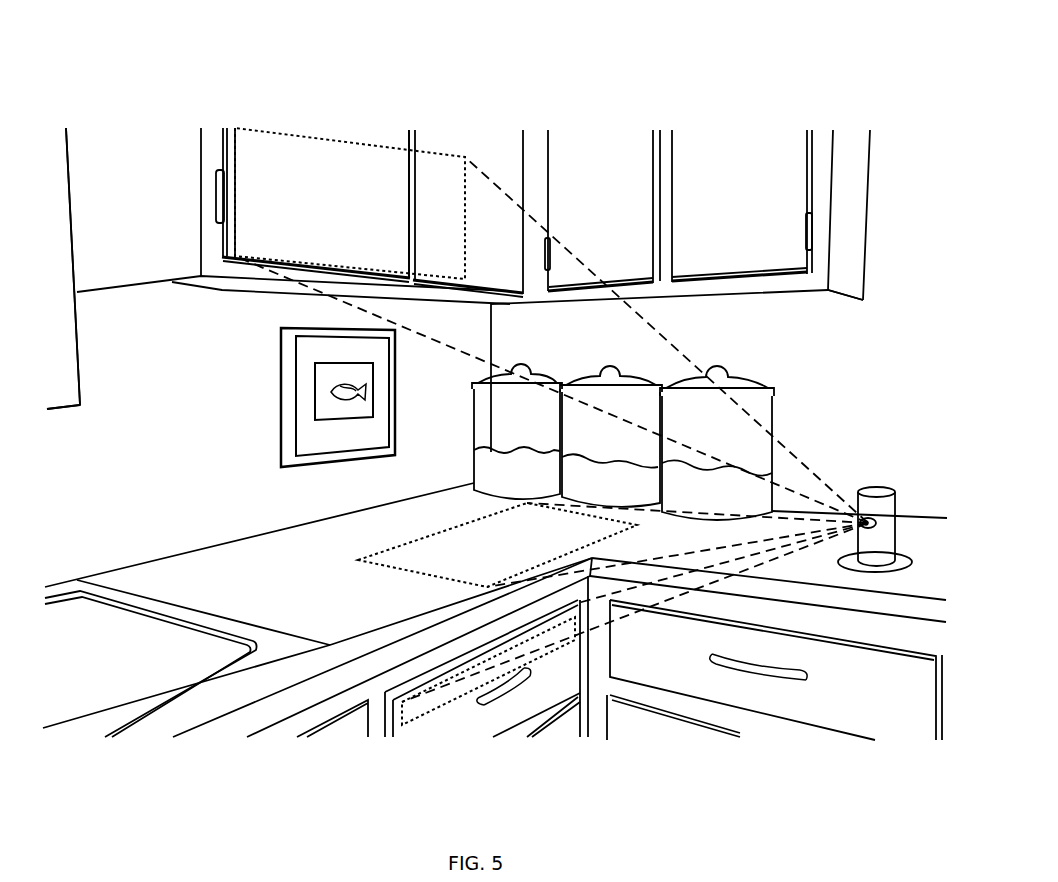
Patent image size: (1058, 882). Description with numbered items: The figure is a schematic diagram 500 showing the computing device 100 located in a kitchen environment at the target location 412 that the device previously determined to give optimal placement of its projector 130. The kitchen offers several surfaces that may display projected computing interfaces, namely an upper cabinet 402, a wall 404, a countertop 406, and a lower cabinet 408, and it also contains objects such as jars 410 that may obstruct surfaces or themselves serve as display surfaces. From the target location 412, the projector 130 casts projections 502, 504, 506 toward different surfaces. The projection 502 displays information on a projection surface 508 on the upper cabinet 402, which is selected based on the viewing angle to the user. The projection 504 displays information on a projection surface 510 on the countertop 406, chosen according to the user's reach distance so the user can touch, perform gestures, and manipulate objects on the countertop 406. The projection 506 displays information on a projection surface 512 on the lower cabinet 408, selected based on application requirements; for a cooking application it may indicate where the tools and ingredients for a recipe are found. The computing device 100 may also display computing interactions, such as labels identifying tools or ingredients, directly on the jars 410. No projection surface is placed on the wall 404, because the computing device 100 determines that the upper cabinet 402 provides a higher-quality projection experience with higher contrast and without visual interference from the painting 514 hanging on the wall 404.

The computing device 100 is at (877, 507).
The projector 130 is at (877, 524).
The upper cabinet 402 is at (508, 161).
The wall 404 is at (144, 402).
The countertop 406 is at (213, 573).
The lower cabinet 408 is at (462, 740).
The jars 410 is at (773, 401).
The target location 412 is at (874, 576).
The diagram 500 is at (906, 79).
The projection 502 is at (266, 131).
The projection 504 is at (417, 538).
The projection 506 is at (449, 672).
The projection surface 508 is at (374, 170).
The projection surface 510 is at (497, 546).
The projection surface 512 is at (493, 667).
The painting 514 is at (280, 423).